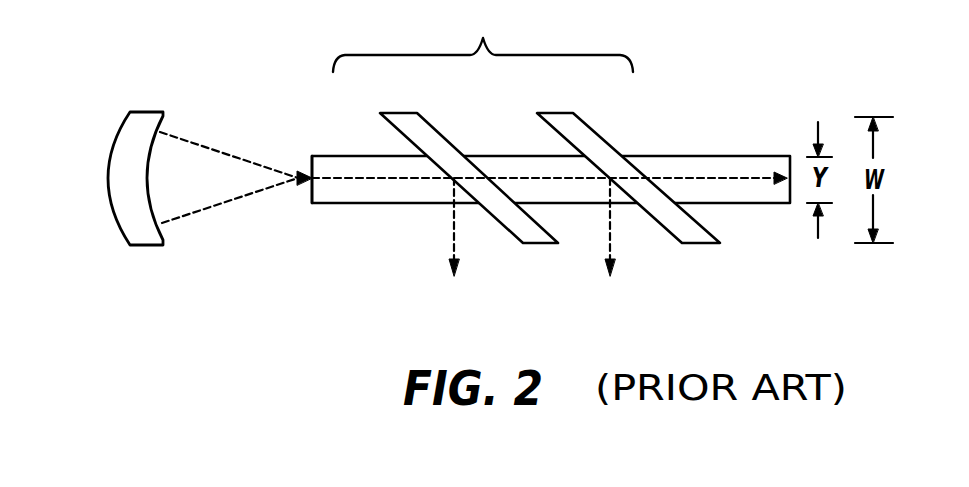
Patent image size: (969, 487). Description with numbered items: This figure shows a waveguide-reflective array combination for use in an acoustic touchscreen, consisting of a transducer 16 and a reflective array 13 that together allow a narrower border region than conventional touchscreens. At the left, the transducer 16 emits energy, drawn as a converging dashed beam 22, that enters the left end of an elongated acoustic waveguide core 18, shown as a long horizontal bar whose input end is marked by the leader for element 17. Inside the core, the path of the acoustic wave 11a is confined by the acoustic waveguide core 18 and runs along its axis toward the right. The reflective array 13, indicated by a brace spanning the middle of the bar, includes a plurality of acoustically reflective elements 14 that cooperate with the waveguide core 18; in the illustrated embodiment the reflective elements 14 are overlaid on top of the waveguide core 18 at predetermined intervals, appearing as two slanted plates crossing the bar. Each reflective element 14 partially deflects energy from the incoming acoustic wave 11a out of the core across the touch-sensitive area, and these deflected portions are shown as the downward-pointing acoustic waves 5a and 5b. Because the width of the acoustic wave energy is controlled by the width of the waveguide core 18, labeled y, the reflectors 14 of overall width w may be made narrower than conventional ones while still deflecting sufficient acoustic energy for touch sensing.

The reflective array 13 is at (483, 40).
The acoustically reflective elements 14 is at (436, 127).
The transducer 16 is at (134, 215).
The waveguide 17 is at (318, 193).
The acoustic waveguide core 18 is at (332, 155).
The input light beam 22 is at (200, 213).
The acoustic wave 11a is at (717, 175).
The acoustic wave 5a is at (456, 243).
The acoustic wave 5b is at (612, 243).